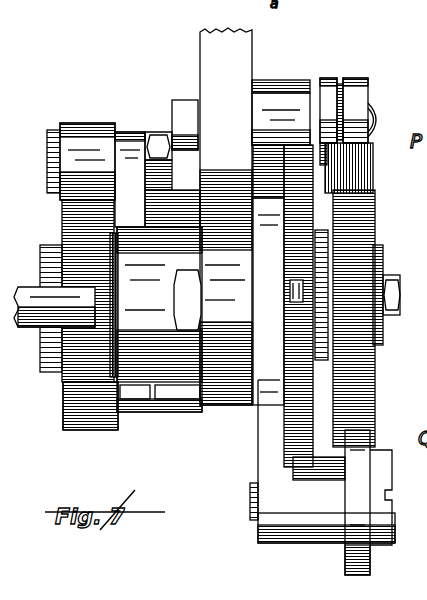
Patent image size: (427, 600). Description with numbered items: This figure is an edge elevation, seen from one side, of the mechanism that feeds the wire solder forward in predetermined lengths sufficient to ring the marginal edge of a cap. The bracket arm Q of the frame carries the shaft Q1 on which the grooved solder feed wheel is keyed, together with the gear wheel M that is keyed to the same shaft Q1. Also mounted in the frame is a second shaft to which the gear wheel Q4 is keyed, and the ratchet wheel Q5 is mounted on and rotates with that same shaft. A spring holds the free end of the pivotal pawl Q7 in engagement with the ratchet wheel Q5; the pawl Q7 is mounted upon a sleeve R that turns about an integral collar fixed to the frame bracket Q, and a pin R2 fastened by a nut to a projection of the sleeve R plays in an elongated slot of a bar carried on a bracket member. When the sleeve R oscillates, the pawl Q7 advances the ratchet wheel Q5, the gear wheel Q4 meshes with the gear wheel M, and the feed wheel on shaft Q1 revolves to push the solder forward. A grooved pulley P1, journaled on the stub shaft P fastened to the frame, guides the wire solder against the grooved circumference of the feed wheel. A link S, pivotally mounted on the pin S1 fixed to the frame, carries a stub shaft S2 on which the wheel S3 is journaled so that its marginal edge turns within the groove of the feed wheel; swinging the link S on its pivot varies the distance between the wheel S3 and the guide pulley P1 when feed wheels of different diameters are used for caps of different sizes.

The bracket arm Q is at (208, 55).
The pivotal pawl Q7 is at (79, 132).
The pin R2 is at (30, 290).
The sleeve R is at (183, 414).
The ratchet wheel Q5 is at (102, 422).
The gear wheel Q4 is at (286, 80).
The gear wheel M is at (298, 262).
The pin S1 is at (288, 297).
The grooved pulley P1 is at (355, 78).
The stub shaft P is at (380, 113).
The shaft Q1 is at (378, 368).
The link S is at (268, 452).
The stub shaft S2 is at (250, 506).
The wheel S3 is at (346, 553).